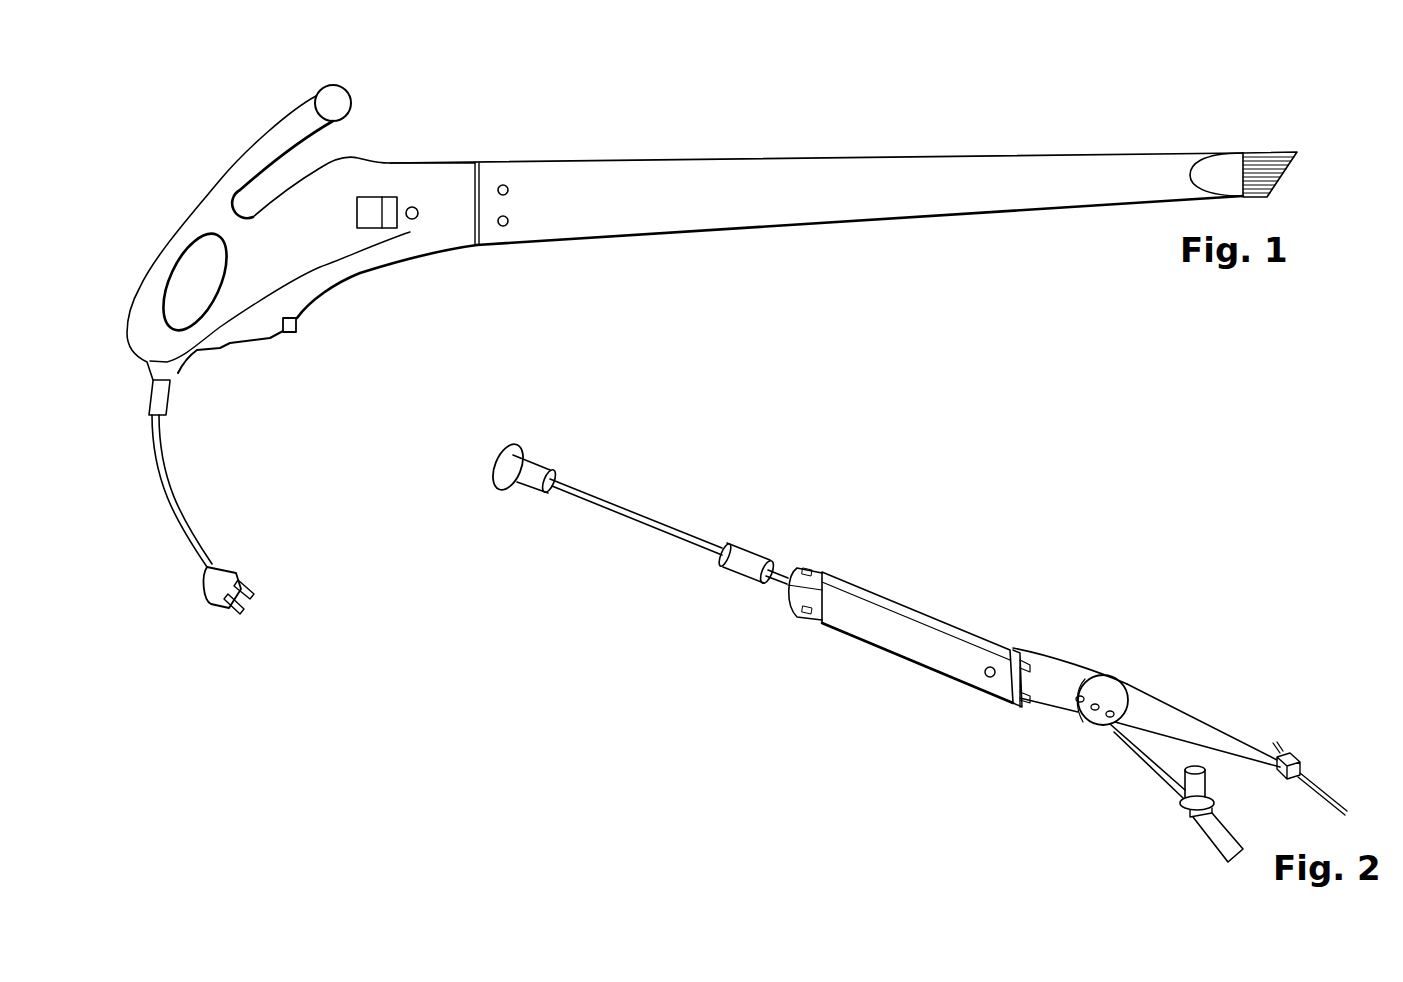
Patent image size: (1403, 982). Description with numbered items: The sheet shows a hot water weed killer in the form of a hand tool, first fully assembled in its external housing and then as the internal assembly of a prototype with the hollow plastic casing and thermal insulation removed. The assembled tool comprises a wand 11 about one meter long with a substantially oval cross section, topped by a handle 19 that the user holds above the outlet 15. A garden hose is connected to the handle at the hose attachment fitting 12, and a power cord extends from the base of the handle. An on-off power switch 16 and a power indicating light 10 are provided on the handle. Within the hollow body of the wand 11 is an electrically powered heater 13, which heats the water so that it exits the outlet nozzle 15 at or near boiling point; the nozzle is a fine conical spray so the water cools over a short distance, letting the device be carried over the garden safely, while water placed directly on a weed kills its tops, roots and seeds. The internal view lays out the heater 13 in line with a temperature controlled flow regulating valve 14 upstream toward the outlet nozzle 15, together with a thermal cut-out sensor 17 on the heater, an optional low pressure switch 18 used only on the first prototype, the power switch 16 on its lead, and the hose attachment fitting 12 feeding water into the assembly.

In FIG. 1, the power indicating light 10 is at (418, 214).
In FIG. 1, the wand 11 is at (943, 190).
In FIG. 2, the wand 11 is at (962, 597).
In FIG. 1, the hose attachment fitting 12 is at (297, 325).
In FIG. 2, the hose attachment fitting 12 is at (1190, 820).
In FIG. 2, the heater 13 is at (890, 629).
In FIG. 2, the temperature controlled flow regulating valve 14 is at (740, 553).
In FIG. 1, the outlet nozzle 15 is at (1263, 170).
In FIG. 2, the outlet nozzle 15 is at (530, 457).
In FIG. 1, the power switch 16 is at (400, 198).
In FIG. 2, the power switch 16 is at (1295, 758).
In FIG. 2, the thermal cut-out sensor 17 is at (987, 675).
In FIG. 2, the low pressure switch 18 is at (1110, 690).
In FIG. 1, the handle 19 is at (277, 132).